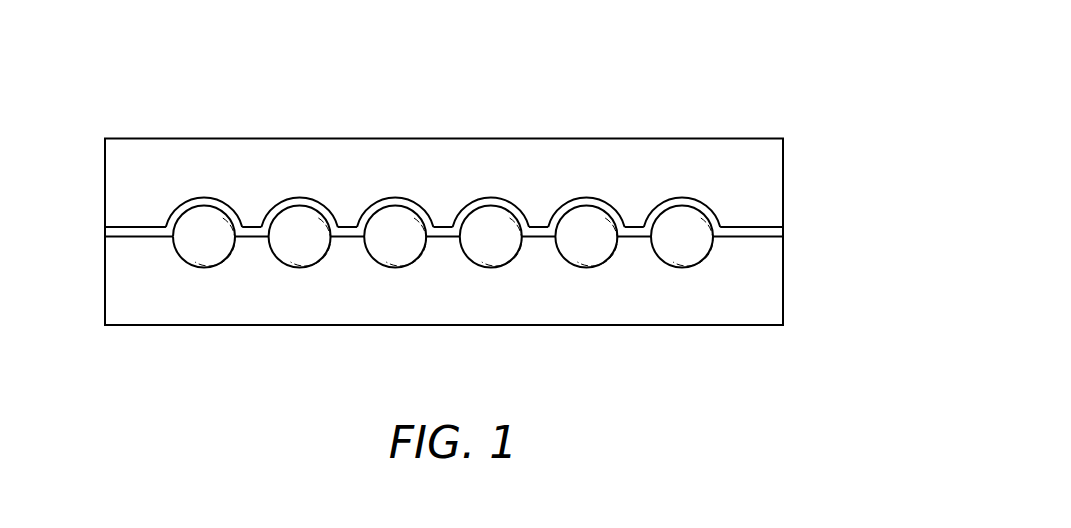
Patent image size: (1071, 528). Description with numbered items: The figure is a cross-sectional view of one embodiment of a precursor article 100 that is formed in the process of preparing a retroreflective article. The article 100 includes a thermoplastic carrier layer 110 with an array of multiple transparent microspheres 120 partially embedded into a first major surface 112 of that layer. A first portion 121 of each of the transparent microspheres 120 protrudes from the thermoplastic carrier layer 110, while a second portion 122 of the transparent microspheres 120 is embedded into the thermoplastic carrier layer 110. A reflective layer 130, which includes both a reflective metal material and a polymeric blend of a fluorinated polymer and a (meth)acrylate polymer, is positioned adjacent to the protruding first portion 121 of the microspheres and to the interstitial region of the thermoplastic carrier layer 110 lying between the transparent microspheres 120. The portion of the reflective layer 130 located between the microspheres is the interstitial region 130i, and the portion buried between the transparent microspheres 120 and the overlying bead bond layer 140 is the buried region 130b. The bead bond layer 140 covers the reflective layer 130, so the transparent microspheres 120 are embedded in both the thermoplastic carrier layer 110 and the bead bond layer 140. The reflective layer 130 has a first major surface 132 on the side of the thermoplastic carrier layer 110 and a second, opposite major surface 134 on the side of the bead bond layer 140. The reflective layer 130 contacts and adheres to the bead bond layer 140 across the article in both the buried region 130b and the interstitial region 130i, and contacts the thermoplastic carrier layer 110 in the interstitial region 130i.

The article 100 is at (448, 198).
The thermoplastic carrier layer 110 is at (681, 308).
The first major surface 112 is at (120, 232).
The transparent microspheres 120 is at (377, 190).
The first portion 121 is at (205, 216).
The second portion 122 is at (200, 247).
The reflective layer 130 is at (448, 235).
The buried region 130b is at (298, 197).
The interstitial region 130i is at (348, 229).
The first major surface 132 is at (753, 237).
The second major surface 134 is at (750, 227).
The bead bond layer 140 is at (545, 155).